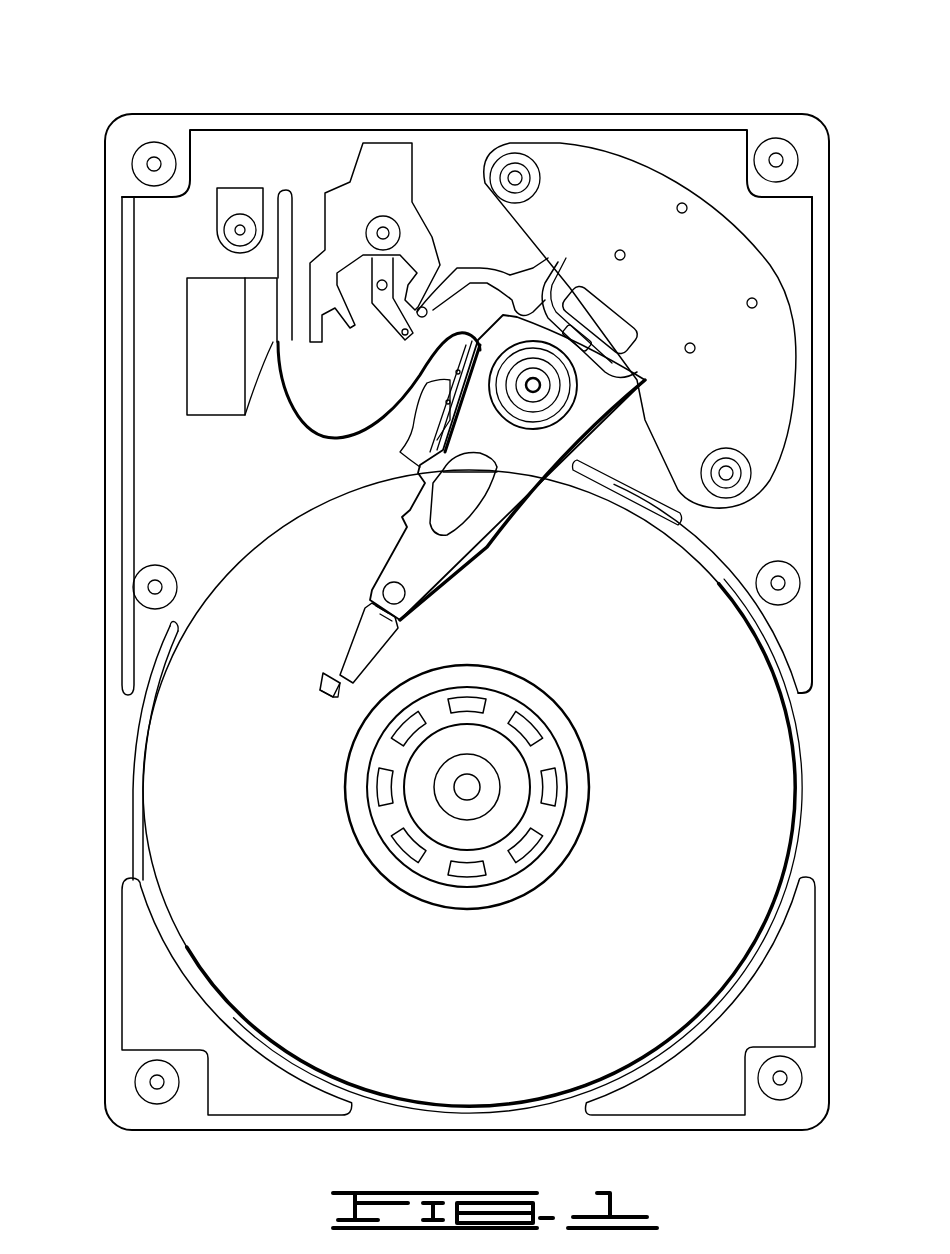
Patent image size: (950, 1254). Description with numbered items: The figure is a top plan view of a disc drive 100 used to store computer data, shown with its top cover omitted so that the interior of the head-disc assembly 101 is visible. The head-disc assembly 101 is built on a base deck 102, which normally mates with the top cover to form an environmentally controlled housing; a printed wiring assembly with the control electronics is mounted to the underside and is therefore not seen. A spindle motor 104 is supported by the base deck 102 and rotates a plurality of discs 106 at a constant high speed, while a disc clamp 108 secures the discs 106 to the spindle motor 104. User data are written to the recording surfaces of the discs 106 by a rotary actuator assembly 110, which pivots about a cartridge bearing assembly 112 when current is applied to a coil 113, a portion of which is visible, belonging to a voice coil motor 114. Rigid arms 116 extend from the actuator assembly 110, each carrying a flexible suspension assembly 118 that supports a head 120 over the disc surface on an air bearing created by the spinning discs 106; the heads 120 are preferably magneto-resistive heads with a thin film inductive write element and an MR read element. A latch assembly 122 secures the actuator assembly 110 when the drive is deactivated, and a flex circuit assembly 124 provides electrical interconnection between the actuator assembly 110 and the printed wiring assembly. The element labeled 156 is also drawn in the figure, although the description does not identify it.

The disc drive 100 is at (225, 98).
The head-disc assembly 101 is at (128, 152).
The base deck 102 is at (205, 485).
The spindle motor 104 is at (478, 817).
The discs 106 is at (720, 878).
The disc clamp 108 is at (363, 837).
The rotary actuator assembly 110 is at (505, 460).
The cartridge bearing assembly 112 is at (540, 400).
The coil 113 is at (633, 343).
The voice coil motor 114 is at (570, 215).
The rigid arms 116 is at (404, 570).
The flexible suspension assembly 118 is at (352, 652).
The heads 120 is at (318, 690).
The latch 122 is at (385, 168).
The flex circuit assembly 124 is at (322, 445).
The voice coil 156 is at (407, 447).